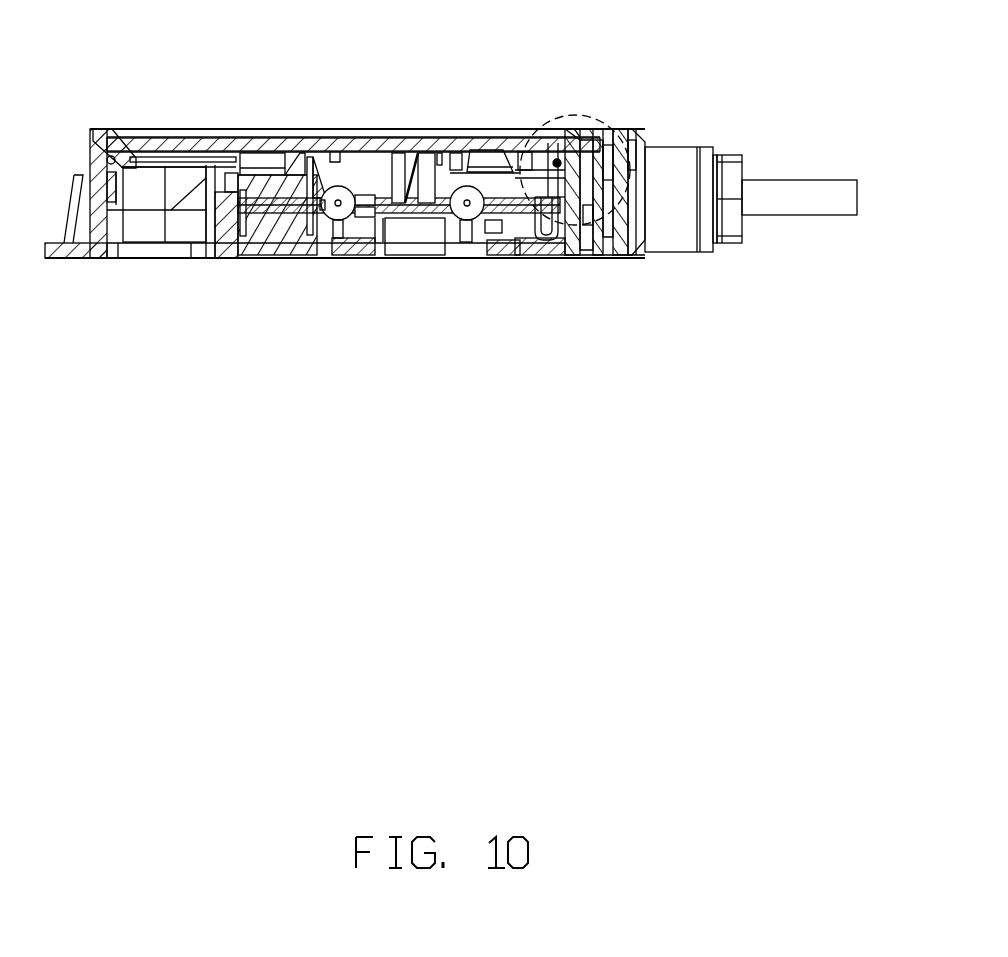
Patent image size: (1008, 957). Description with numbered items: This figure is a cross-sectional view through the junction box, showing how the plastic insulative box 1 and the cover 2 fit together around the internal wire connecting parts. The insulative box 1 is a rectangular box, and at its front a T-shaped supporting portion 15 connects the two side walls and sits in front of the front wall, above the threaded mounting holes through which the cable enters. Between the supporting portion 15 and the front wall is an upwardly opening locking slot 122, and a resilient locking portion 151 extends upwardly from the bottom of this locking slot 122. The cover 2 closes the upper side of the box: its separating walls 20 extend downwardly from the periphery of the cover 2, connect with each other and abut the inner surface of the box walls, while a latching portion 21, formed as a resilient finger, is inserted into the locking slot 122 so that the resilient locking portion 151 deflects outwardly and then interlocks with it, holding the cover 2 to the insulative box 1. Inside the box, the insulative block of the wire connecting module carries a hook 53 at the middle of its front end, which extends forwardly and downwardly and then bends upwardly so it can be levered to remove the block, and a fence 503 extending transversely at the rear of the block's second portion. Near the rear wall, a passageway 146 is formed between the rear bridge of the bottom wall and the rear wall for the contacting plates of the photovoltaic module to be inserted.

The insulative box 1 is at (98, 222).
The cover 2 is at (342, 129).
The supporting portion 15 is at (645, 150).
The separating walls 20 is at (528, 170).
The latching portion 21 is at (590, 170).
The hook 53 is at (563, 217).
The locking slot 122 is at (607, 152).
The passageway 146 is at (147, 223).
The resilient locking portion 151 is at (630, 148).
The fence 503 is at (270, 223).